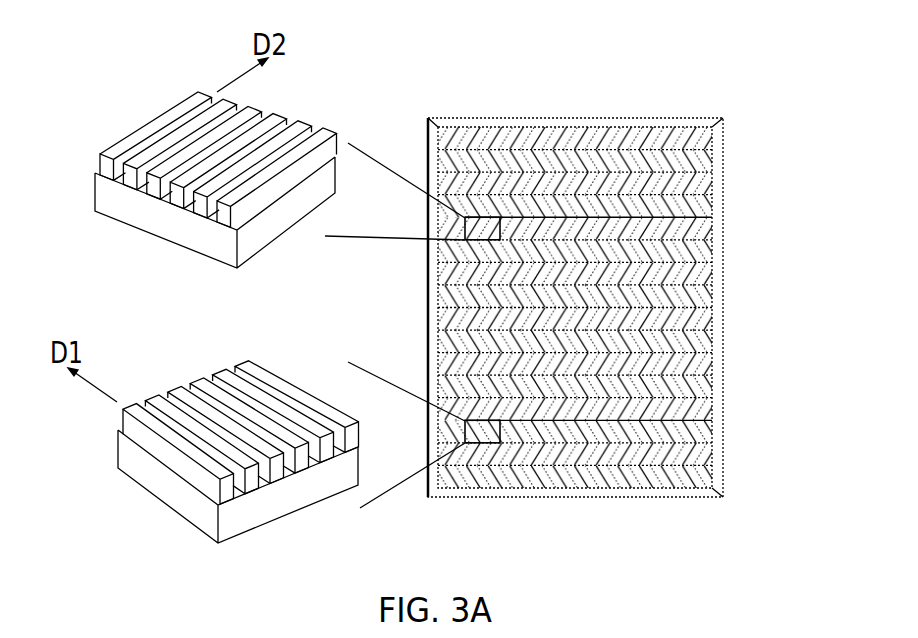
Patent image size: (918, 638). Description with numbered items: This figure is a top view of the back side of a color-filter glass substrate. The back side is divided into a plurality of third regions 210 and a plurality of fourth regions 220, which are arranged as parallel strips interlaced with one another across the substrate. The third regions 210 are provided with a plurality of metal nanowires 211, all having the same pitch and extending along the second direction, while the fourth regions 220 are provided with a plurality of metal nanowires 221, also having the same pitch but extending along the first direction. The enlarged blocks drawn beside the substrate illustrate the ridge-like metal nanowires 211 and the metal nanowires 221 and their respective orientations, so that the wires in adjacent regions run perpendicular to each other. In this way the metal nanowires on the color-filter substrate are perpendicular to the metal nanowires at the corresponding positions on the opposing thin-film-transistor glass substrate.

The third regions 210 is at (713, 227).
The metal nanowires 211 is at (198, 93).
The fourth regions 220 is at (683, 430).
The metal nanowires 221 is at (124, 408).